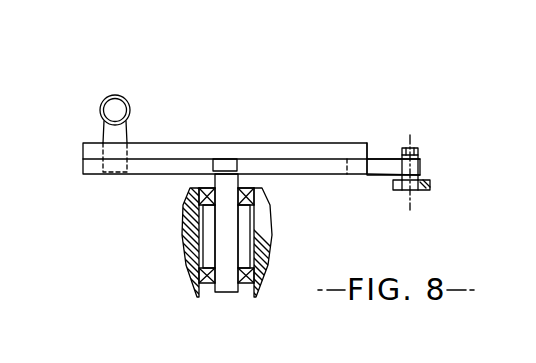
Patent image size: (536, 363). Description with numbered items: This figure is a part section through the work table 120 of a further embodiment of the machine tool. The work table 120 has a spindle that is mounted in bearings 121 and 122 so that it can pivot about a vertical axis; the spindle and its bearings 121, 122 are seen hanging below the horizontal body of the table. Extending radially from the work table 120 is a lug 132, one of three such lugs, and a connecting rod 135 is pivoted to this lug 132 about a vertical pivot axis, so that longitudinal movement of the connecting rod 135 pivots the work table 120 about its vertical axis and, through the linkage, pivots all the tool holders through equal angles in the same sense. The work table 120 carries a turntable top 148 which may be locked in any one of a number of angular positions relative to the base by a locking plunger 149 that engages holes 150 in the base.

The work table 120 is at (88, 178).
The bearing 121 is at (197, 200).
The bearing 122 is at (199, 277).
The lug 132 is at (422, 160).
The connecting rod 135 is at (428, 190).
The turntable top 148 is at (348, 150).
The locking plunger 149 is at (163, 98).
The holes 150 is at (130, 170).